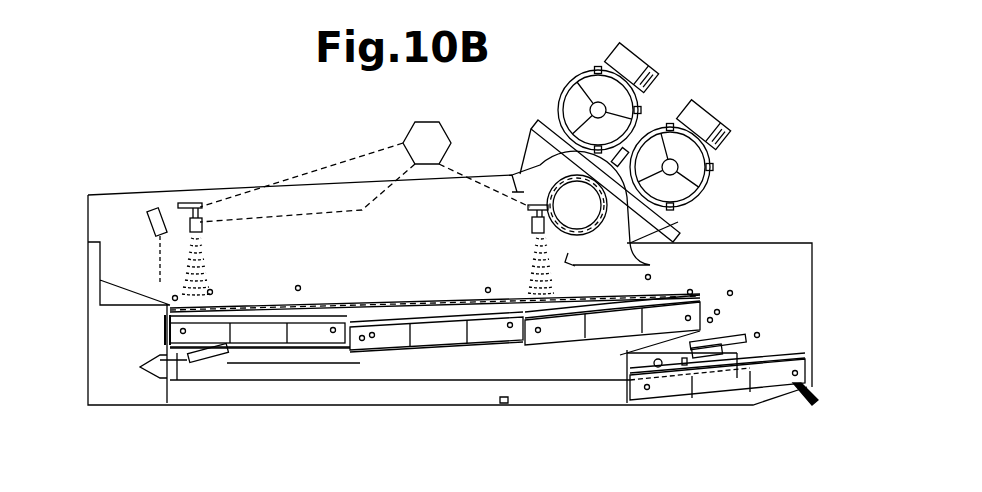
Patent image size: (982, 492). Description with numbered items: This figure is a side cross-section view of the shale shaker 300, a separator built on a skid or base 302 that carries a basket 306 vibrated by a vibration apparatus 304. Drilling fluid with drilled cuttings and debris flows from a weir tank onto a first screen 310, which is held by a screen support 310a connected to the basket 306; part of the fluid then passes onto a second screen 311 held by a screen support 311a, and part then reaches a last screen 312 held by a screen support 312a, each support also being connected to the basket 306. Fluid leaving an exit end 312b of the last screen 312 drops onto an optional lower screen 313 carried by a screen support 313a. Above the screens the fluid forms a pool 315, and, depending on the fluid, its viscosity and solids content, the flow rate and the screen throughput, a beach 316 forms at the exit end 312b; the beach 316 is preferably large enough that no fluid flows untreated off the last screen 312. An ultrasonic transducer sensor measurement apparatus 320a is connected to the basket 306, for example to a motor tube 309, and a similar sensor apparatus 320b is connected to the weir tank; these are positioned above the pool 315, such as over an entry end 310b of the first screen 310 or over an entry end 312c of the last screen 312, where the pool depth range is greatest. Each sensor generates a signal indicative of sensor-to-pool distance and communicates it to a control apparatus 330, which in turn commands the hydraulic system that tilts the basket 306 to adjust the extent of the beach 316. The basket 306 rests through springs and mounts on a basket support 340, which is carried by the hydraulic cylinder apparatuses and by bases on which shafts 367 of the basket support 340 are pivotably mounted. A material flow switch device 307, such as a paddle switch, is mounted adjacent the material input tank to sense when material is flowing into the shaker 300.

The shale shaker 300 is at (280, 160).
The skid or base 302 is at (193, 395).
The vibration apparatus 304 is at (703, 120).
The basket 306 is at (742, 243).
The material flow switch device 307 is at (163, 209).
The motor tube 309 is at (534, 173).
The first screen 310 is at (220, 318).
The screen support 310a is at (303, 330).
The entry end 310b is at (170, 305).
The second screen 311 is at (385, 322).
The screen support 311a is at (383, 340).
The last screen 312 is at (560, 318).
The screen support 312a is at (717, 318).
The exit end 312b is at (683, 302).
The entry end 312c is at (533, 312).
The lower screen 313 is at (677, 370).
The screen support 313a is at (767, 382).
The pool 315 is at (365, 310).
The beach 316 is at (673, 298).
The ultrasonic transducer sensor measurement apparatus 320a is at (530, 223).
The sensor apparatus 320b is at (203, 213).
The control apparatus 330 is at (410, 138).
The basket support 340 is at (473, 370).
The shaft 367 is at (610, 380).